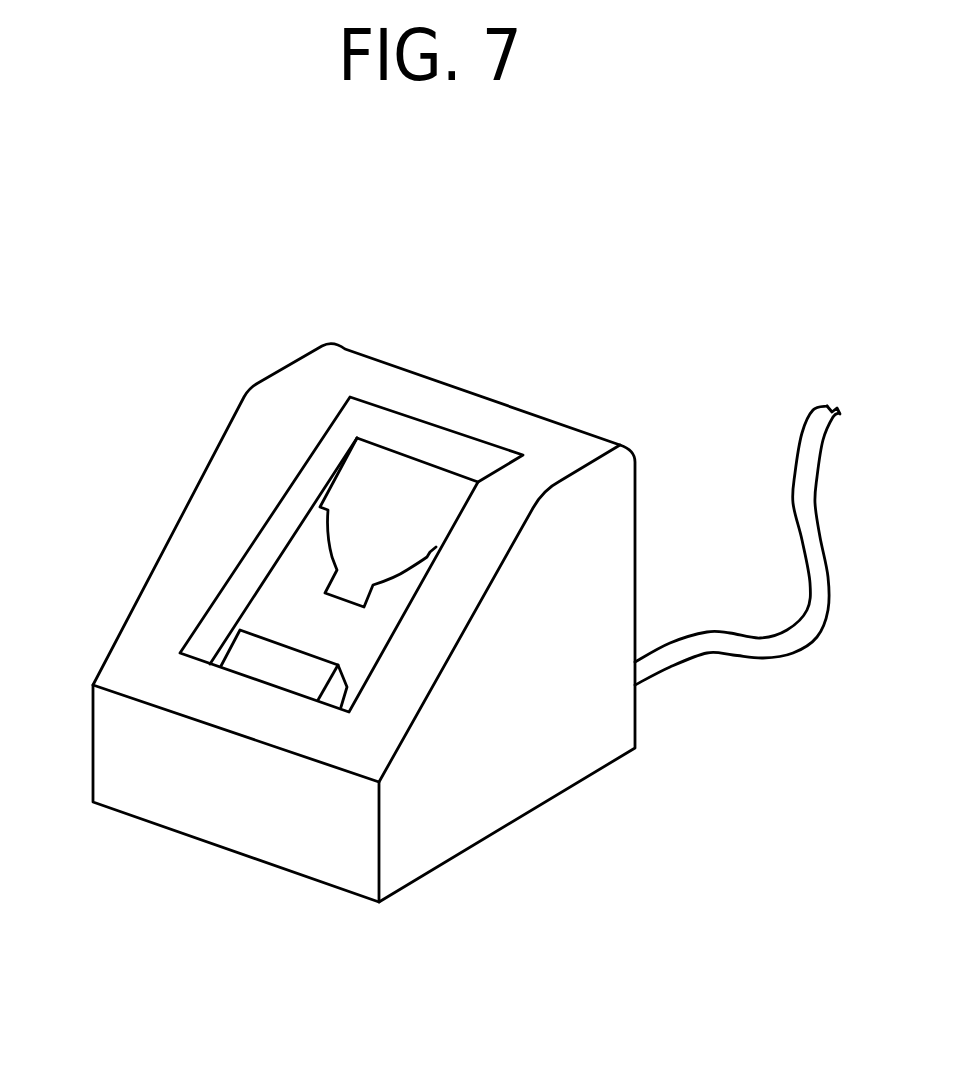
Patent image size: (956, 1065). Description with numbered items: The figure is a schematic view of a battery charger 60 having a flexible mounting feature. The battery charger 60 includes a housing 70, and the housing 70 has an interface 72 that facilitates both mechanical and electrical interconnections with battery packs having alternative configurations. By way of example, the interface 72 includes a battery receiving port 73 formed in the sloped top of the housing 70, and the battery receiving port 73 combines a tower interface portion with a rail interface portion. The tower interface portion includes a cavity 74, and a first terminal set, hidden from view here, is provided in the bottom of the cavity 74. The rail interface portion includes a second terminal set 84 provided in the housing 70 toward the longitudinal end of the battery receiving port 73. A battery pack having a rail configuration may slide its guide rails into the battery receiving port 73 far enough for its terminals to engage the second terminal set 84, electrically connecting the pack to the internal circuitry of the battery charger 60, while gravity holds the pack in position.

The battery charger 60 is at (735, 400).
The housing 70 is at (175, 533).
The interface 72 is at (157, 340).
The battery receiving port 73 is at (377, 404).
The cavity 74 is at (430, 463).
The second terminal set 84 is at (293, 650).